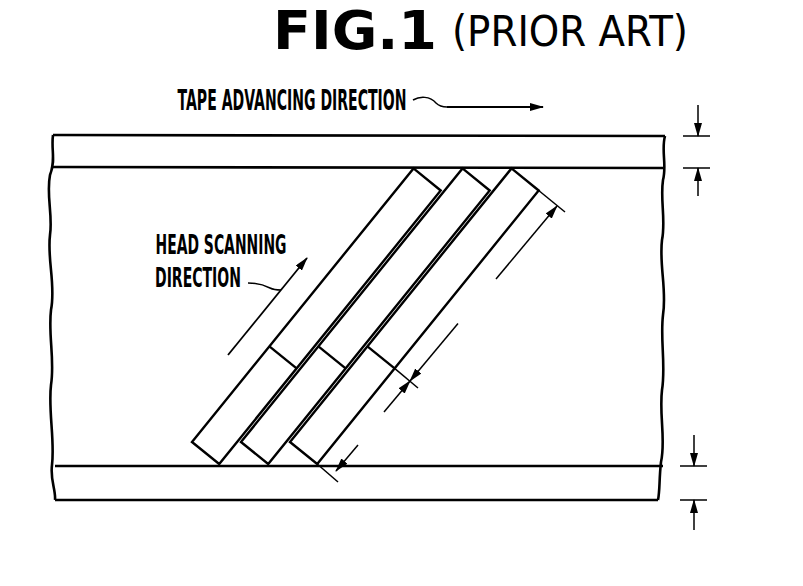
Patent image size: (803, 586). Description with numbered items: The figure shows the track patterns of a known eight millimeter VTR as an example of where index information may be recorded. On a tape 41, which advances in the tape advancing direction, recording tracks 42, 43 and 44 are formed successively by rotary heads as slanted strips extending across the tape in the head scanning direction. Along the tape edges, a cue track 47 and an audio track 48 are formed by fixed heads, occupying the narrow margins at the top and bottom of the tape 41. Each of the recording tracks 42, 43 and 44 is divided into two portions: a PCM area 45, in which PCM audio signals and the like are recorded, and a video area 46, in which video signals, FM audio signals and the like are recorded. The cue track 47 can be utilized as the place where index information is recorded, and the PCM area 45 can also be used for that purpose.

The tape 41 is at (621, 136).
The recording track 42 is at (300, 457).
The recording track 43 is at (252, 458).
The recording track 44 is at (203, 457).
The PCM area 45 is at (367, 425).
The video area 46 is at (487, 286).
The cue track 47 is at (711, 150).
The audio track 48 is at (705, 482).